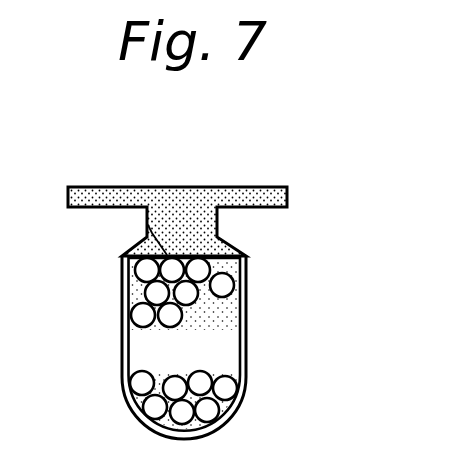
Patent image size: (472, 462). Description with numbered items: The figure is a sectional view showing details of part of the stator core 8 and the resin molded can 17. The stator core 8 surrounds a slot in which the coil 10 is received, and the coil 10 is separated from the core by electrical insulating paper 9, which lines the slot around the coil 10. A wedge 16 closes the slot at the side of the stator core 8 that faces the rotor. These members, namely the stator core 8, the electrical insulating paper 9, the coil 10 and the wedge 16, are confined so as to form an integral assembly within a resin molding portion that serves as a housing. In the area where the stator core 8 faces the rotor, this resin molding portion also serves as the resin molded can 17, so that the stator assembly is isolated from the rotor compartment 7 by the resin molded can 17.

The rotor compartment 7 is at (208, 165).
The resin molded can 17 is at (195, 212).
The wedge 16 is at (148, 225).
The stator core 8 is at (257, 273).
The electrical insulating paper 9 is at (248, 330).
The coil 10 is at (225, 388).